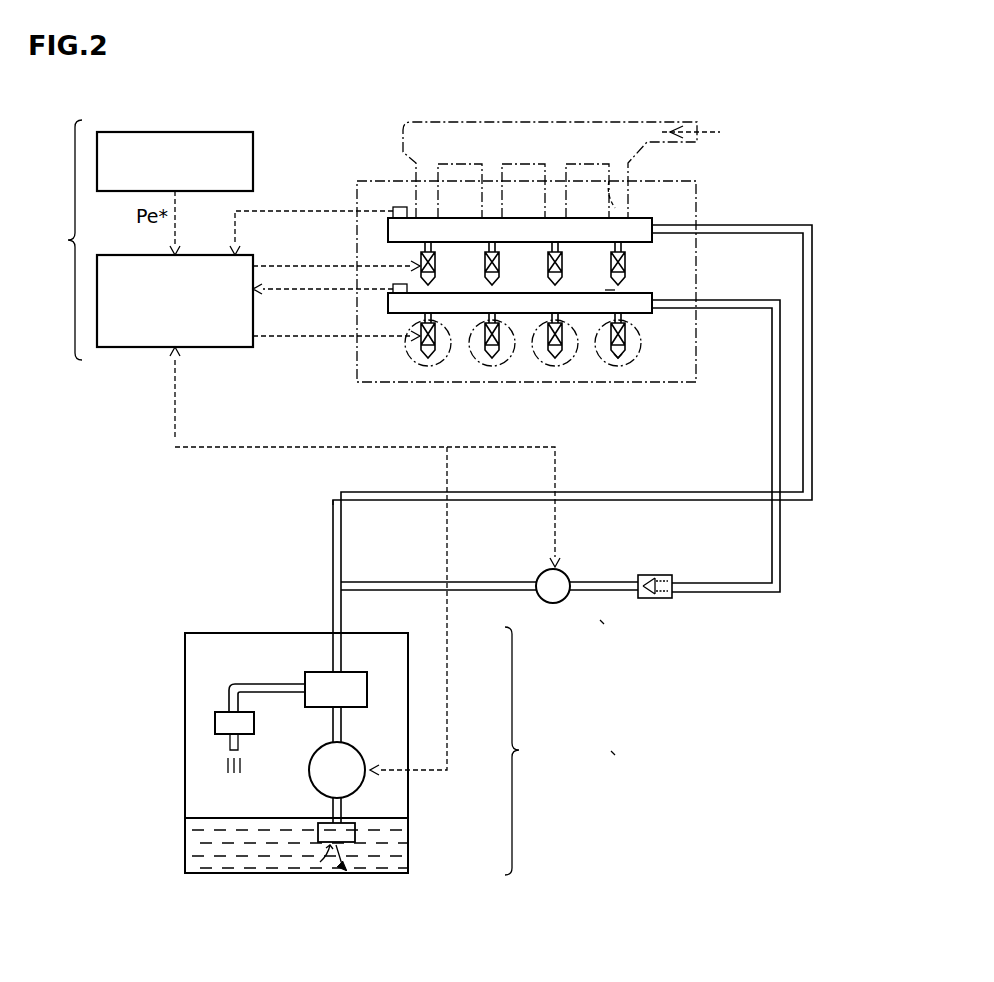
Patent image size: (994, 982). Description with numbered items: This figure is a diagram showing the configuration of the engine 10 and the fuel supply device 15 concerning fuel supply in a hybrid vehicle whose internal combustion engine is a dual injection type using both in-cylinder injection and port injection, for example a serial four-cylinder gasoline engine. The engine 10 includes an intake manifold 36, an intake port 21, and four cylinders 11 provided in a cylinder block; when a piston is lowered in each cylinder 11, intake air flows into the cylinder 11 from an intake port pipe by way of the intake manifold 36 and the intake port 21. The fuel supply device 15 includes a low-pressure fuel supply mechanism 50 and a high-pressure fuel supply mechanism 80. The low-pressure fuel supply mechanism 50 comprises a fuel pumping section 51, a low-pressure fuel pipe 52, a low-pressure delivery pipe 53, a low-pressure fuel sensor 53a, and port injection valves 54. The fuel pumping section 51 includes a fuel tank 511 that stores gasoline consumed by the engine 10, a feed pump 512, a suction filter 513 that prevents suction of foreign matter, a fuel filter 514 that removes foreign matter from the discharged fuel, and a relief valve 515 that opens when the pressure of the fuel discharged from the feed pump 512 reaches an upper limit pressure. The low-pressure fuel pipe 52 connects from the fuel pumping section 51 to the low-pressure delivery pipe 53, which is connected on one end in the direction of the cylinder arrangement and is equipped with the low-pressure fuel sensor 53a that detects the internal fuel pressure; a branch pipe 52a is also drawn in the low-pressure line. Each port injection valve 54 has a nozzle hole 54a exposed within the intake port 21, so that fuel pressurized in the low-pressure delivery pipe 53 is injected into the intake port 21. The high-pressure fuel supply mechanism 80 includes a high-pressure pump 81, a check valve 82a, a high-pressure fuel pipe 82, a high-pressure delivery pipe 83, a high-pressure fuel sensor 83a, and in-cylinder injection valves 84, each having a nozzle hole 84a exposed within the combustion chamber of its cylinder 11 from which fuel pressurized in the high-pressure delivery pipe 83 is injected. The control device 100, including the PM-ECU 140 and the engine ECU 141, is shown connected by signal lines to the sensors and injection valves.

The engine 10 is at (700, 195).
The cylinder 11 is at (604, 368).
The fuel supply device 15 is at (613, 753).
The intake port 21 is at (615, 186).
The intake manifold 36 is at (531, 122).
The low-pressure fuel supply mechanism 50 is at (312, 535).
The fuel pumping section 51 is at (524, 751).
The fuel tank 511 is at (206, 633).
The feed pump 512 is at (357, 790).
The suction filter 513 is at (355, 833).
The fuel filter 514 is at (367, 688).
The relief valve 515 is at (215, 723).
The low-pressure fuel pipe 52 is at (633, 492).
The branch fuel pipe 52a is at (421, 582).
The low-pressure delivery pipe 53 is at (645, 218).
The low-pressure fuel sensor 53a is at (395, 207).
The port injection valve 54 is at (627, 266).
The nozzle hole 54a is at (610, 293).
The high-pressure fuel supply mechanism 80 is at (602, 622).
The high-pressure pump 81 is at (569, 577).
The high-pressure fuel pipe 82 is at (729, 583).
The check valve 82a is at (655, 575).
The high-pressure delivery pipe 83 is at (646, 296).
The high-pressure fuel sensor 83a is at (395, 285).
The in-cylinder injection valve 84 is at (627, 338).
The nozzle hole 84a is at (618, 358).
The control device 100 is at (54, 240).
The PM-ECU 140 is at (206, 132).
The engine ECU 141 is at (127, 348).